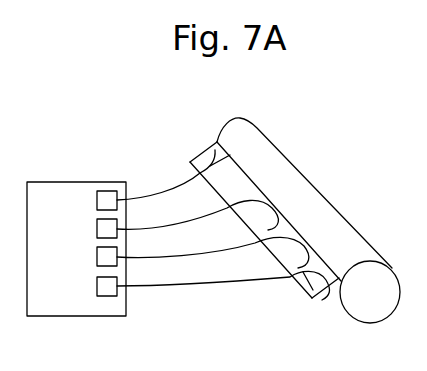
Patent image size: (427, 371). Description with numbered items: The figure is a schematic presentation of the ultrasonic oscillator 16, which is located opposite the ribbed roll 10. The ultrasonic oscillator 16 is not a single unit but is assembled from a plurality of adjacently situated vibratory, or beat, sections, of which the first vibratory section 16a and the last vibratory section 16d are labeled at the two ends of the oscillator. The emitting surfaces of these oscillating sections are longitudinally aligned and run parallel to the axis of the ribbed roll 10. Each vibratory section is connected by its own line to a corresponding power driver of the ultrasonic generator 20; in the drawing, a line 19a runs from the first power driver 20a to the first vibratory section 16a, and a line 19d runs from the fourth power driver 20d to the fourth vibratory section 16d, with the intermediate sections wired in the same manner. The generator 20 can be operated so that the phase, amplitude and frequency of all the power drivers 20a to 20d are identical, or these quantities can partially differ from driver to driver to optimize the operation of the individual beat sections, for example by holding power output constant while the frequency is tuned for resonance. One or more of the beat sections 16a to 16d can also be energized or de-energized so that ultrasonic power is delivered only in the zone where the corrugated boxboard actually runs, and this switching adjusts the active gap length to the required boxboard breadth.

The ribbed roll 10 is at (390, 299).
The ultrasonic oscillator 16 is at (203, 147).
The vibratory section 16a is at (235, 152).
The vibratory section 16d is at (313, 298).
The line 19a is at (164, 185).
The line 19d is at (163, 285).
The ultrasonic generator 20 is at (76, 303).
The power driver 20a is at (102, 190).
The power driver 20d is at (104, 296).